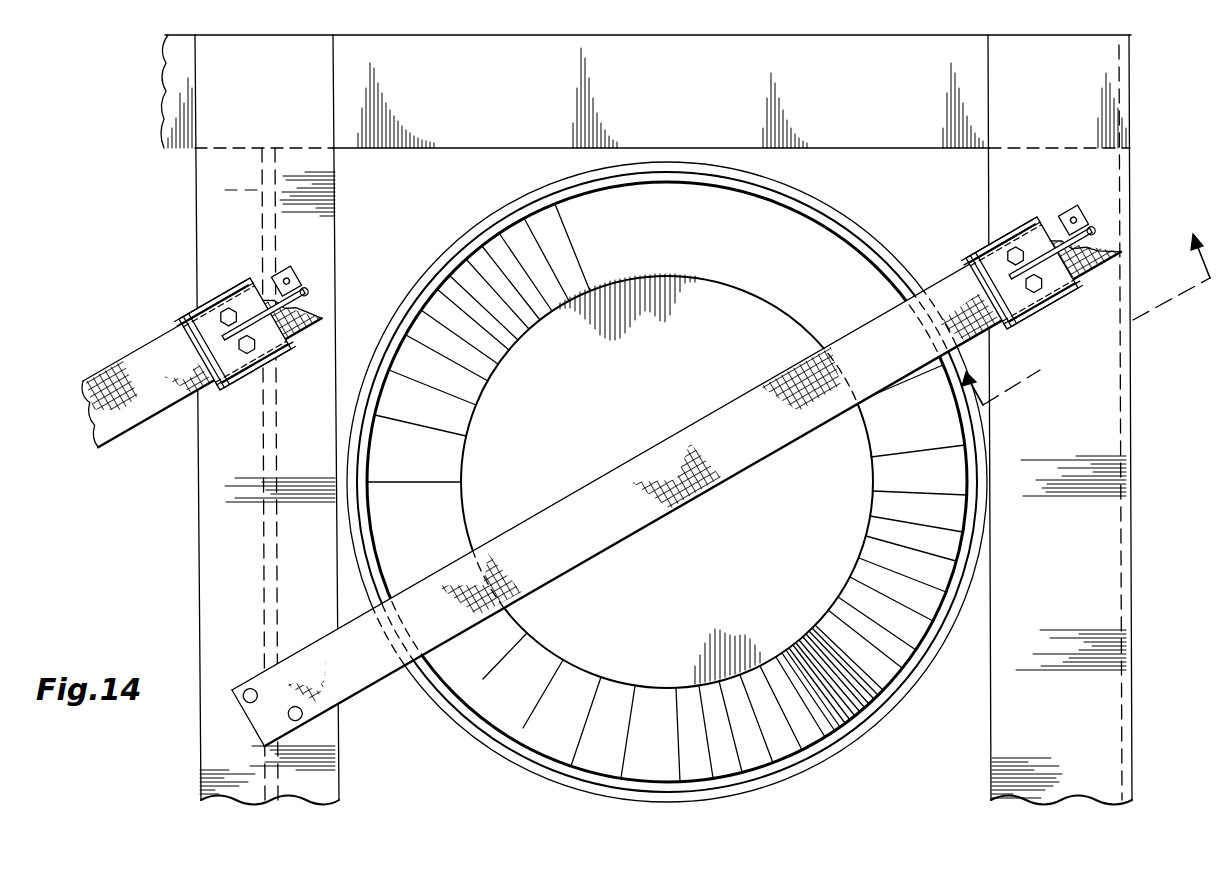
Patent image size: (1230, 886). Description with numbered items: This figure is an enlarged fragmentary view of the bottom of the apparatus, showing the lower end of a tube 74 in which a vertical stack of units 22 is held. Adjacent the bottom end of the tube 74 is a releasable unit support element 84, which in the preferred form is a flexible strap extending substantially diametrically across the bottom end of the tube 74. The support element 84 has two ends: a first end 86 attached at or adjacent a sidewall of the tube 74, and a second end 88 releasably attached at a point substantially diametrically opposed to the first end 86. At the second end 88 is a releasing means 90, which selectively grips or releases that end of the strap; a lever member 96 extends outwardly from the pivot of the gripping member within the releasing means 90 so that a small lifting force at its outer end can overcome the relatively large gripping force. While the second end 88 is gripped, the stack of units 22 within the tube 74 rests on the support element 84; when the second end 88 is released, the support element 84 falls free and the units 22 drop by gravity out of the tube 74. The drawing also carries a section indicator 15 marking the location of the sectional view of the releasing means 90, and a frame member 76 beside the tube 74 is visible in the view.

The units 22 is at (720, 384).
The tube 74 is at (880, 712).
The frame post 76 is at (1100, 428).
The releasable unit support element 84 is at (130, 365).
The first end 86 is at (252, 714).
The second end 88 is at (330, 312).
The releasing means 90 is at (215, 283).
The lever member 96 is at (1055, 245).
The section line 15- 15 is at (1096, 329).